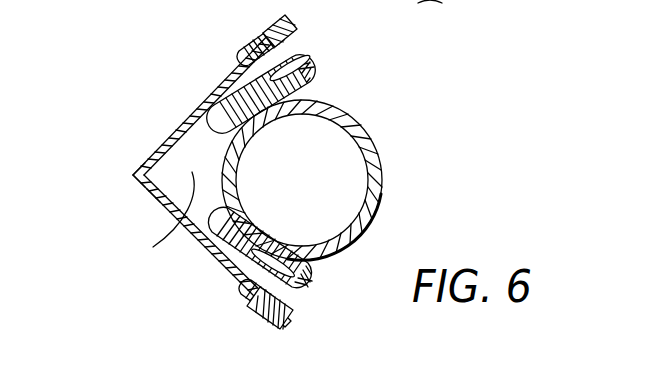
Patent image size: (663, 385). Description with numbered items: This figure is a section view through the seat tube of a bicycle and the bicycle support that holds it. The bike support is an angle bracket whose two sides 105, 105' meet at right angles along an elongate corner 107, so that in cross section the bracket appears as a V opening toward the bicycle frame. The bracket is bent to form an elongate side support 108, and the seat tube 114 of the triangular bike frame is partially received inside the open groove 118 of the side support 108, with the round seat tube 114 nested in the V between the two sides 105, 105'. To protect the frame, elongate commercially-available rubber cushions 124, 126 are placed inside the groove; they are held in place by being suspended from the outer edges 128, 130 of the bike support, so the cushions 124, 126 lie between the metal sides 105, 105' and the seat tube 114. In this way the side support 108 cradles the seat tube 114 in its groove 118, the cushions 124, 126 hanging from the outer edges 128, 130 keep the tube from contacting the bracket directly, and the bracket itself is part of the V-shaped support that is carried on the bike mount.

The side of angle bracket 105 is at (207, 101).
The side of angle bracket 105' is at (212, 251).
The elongate corner 107 is at (134, 174).
The side support 108 is at (151, 202).
The seat tube 114 is at (378, 206).
The open groove 118 is at (153, 247).
The rubber cushion 124 is at (323, 57).
The rubber cushion 126 is at (313, 284).
The outer edge 128 is at (272, 33).
The outer edge 130 is at (257, 313).